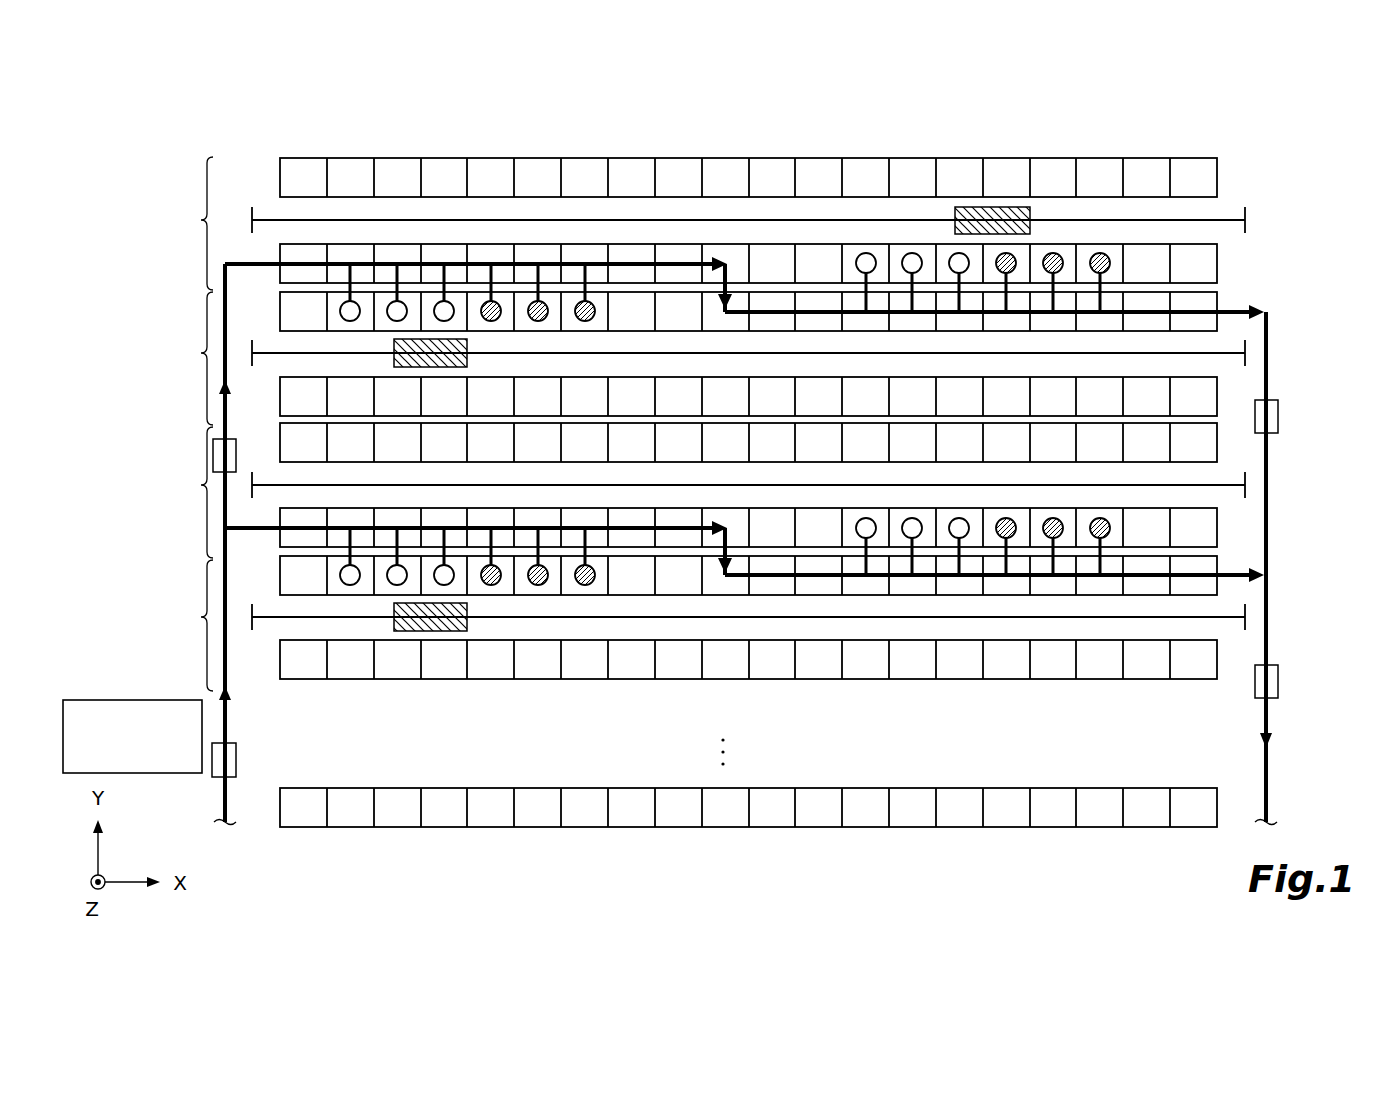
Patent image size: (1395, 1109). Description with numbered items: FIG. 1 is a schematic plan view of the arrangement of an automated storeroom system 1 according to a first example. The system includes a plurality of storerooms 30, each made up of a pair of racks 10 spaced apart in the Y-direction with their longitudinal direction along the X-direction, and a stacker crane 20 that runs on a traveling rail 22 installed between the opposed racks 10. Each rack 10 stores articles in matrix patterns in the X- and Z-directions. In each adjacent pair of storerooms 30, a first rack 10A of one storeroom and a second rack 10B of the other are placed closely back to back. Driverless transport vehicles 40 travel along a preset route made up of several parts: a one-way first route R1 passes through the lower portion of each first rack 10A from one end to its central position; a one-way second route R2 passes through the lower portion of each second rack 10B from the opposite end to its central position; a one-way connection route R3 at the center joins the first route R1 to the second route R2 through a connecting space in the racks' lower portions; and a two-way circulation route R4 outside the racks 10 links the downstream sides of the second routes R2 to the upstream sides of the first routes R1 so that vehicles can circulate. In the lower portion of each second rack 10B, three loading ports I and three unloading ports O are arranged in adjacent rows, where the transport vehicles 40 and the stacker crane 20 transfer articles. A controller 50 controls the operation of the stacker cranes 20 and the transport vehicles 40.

The automated storeroom system 1 is at (165, 163).
The rack 10 is at (1233, 166).
The first rack 10A is at (1233, 256).
The second rack 10B is at (1233, 291).
The stacker crane 20 is at (995, 207).
The traveling rail 22 is at (1150, 220).
The storeroom 30 is at (191, 424).
The transport vehicle 40 is at (236, 457).
The controller 50 is at (75, 700).
The first route R1 is at (430, 262).
The second route R2 is at (822, 305).
The connection route R3 is at (735, 275).
The circulation route R4 is at (225, 715).
The loading port I is at (410, 300).
The unloading port O is at (570, 300).